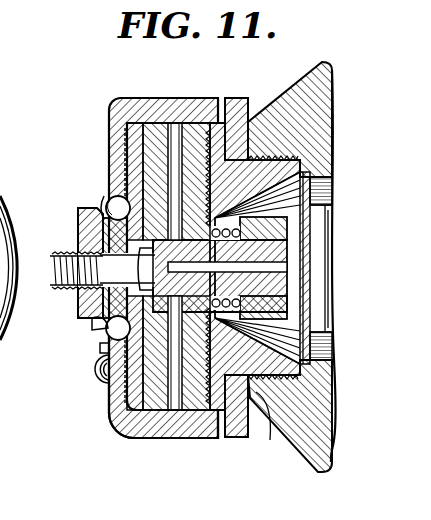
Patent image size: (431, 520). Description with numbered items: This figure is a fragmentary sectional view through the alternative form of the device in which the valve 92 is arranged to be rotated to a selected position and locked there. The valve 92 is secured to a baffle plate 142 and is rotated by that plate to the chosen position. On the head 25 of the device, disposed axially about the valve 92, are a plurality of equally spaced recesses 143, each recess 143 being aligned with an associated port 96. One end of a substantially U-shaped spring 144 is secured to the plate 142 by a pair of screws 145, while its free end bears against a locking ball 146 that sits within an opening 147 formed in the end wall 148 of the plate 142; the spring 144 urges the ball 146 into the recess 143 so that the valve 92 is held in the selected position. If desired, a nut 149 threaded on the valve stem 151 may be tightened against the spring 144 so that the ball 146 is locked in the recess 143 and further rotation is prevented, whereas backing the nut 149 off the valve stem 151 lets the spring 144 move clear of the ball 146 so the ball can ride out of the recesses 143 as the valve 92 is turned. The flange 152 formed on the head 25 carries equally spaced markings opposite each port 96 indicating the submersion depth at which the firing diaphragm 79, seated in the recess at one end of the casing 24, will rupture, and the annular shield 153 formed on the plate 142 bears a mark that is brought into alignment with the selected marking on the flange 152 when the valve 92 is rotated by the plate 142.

The casing 24 is at (288, 88).
The head 25 is at (270, 440).
The firing diaphragm 79 is at (312, 233).
The valve 92 is at (103, 286).
The port 96 is at (180, 392).
The baffle plate 142 is at (108, 398).
The recess 143 is at (130, 203).
The U-shaped spring 144 is at (100, 344).
The screw 145 is at (96, 368).
The locking ball 146 is at (110, 200).
The opening 147 is at (122, 185).
The end wall 148 is at (108, 128).
The nut 149 is at (84, 224).
The valve stem 151 is at (63, 257).
The flange 152 is at (238, 438).
The annular shield 153 is at (160, 442).